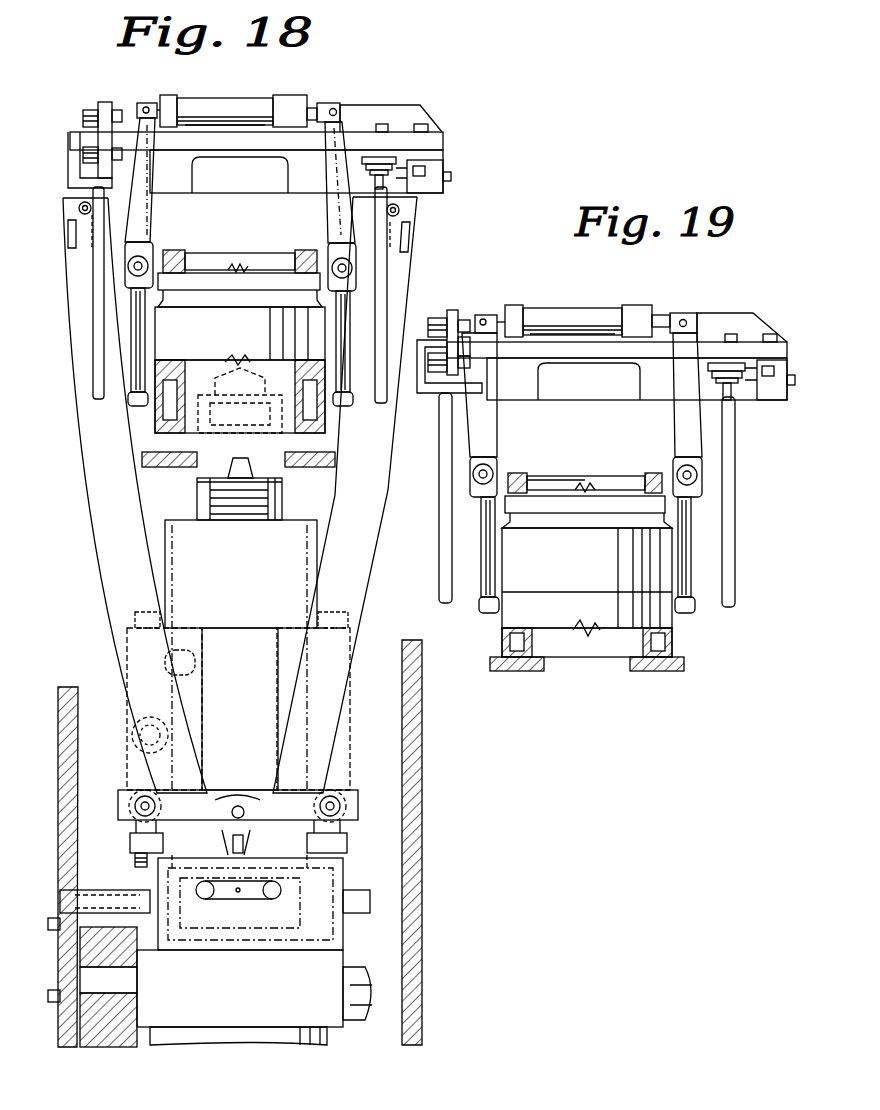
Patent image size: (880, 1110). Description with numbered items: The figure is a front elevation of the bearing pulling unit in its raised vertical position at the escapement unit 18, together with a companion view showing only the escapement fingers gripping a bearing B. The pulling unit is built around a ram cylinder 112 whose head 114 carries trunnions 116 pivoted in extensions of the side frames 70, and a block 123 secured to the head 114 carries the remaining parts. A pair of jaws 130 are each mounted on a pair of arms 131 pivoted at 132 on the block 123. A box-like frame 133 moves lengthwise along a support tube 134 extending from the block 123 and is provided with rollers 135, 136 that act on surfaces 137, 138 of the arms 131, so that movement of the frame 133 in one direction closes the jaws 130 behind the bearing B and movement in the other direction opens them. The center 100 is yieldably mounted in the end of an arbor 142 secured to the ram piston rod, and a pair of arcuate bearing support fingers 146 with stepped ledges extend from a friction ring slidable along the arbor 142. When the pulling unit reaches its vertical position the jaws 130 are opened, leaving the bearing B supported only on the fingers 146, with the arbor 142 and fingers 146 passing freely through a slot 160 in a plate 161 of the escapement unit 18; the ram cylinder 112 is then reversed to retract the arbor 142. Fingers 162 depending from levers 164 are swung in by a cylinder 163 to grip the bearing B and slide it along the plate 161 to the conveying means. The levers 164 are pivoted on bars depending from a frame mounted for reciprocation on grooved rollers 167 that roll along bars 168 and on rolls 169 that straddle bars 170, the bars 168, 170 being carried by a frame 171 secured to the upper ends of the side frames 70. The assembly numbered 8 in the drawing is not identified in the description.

In FIG. 18, the workpiece holding assembly 8 is at (102, 612).
In FIG. 19, the escapement unit 18 is at (634, 303).
In FIG. 18, the side frames 70 is at (424, 782).
In FIG. 19, the side frames 70 is at (736, 505).
In FIG. 18, the center 100 is at (250, 462).
In FIG. 18, the ram cylinder 112 is at (312, 1044).
In FIG. 18, the head 114 is at (200, 1022).
In FIG. 18, the trunnions 116 is at (360, 968).
In FIG. 18, the block 123 is at (352, 937).
In FIG. 18, the jaws 130 is at (63, 197).
In FIG. 18, the arms 131 is at (70, 283).
In FIG. 18, the pivot 132 is at (272, 900).
In FIG. 18, the box-like frame 133 is at (360, 812).
In FIG. 18, the support tube 134 is at (165, 541).
In FIG. 18, the rollers 135 is at (242, 795).
In FIG. 18, the rollers 136 is at (140, 790).
In FIG. 18, the surfaces 137 is at (180, 552).
In FIG. 18, the surfaces 138 is at (368, 592).
In FIG. 18, the arbor 142 is at (198, 503).
In FIG. 18, the bearing support fingers 146 is at (270, 503).
In FIG. 18, the slot 160 is at (198, 462).
In FIG. 19, the slot 160 is at (548, 672).
In FIG. 18, the plate 161 is at (335, 460).
In FIG. 19, the plate 161 is at (684, 665).
In FIG. 18, the fingers 162 is at (240, 347).
In FIG. 19, the fingers 162 is at (495, 576).
In FIG. 18, the cylinder 163 is at (222, 99).
In FIG. 19, the cylinder 163 is at (570, 307).
In FIG. 18, the levers 164 is at (330, 220).
In FIG. 19, the levers 164 is at (690, 433).
In FIG. 19, the grooved rollers 167 is at (712, 375).
In FIG. 19, the bars 168 is at (790, 375).
In FIG. 19, the rolls 169 is at (440, 308).
In FIG. 19, the bars 170 is at (472, 362).
In FIG. 19, the frame 171 is at (776, 298).
In FIG. 18, the bearing B is at (155, 422).
In FIG. 19, the bearing B is at (680, 636).